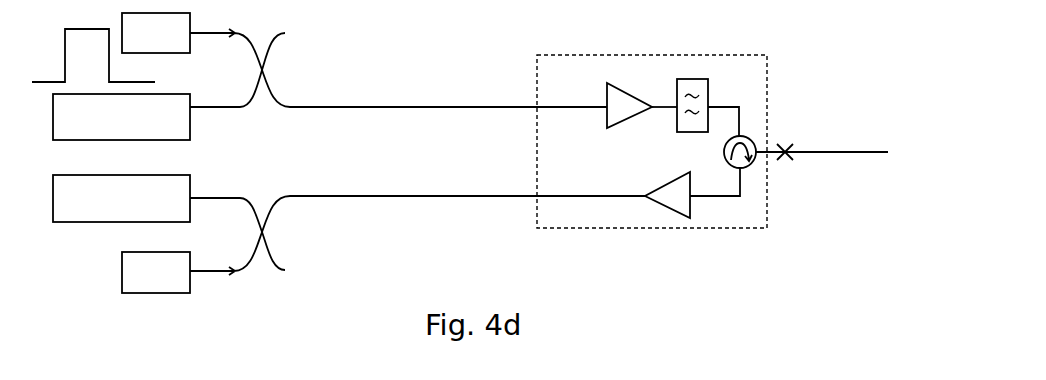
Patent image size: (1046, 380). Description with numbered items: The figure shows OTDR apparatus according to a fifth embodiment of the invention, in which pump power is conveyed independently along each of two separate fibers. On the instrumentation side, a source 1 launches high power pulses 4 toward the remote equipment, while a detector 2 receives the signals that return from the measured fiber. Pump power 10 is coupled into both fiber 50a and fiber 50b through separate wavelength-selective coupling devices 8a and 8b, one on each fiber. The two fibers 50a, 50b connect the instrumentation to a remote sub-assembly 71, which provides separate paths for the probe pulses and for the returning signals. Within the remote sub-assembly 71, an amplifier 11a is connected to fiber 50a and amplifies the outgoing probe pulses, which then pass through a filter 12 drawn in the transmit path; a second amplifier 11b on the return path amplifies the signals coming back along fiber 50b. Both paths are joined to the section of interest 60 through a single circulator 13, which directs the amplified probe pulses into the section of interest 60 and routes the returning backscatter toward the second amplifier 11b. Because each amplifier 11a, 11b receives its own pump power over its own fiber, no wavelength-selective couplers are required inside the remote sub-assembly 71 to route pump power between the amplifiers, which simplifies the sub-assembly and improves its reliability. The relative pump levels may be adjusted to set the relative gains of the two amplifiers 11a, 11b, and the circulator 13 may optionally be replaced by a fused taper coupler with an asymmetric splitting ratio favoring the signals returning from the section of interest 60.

The source 1 is at (129, 128).
The detector 2 is at (129, 210).
The high power pulses 4 is at (94, 68).
The pump power 10 is at (172, 45).
The wavelength-selective coupling device 8a is at (280, 48).
The wavelength-selective coupling device 8b is at (280, 210).
The fiber 50a is at (418, 106).
The fiber 50b is at (416, 195).
The remote sub-assembly 71 is at (579, 90).
The amplifier 11a is at (621, 88).
The second amplifier 11b is at (663, 207).
The filter 12 is at (690, 79).
The circulator 13 is at (750, 165).
The section of interest 60 is at (852, 151).